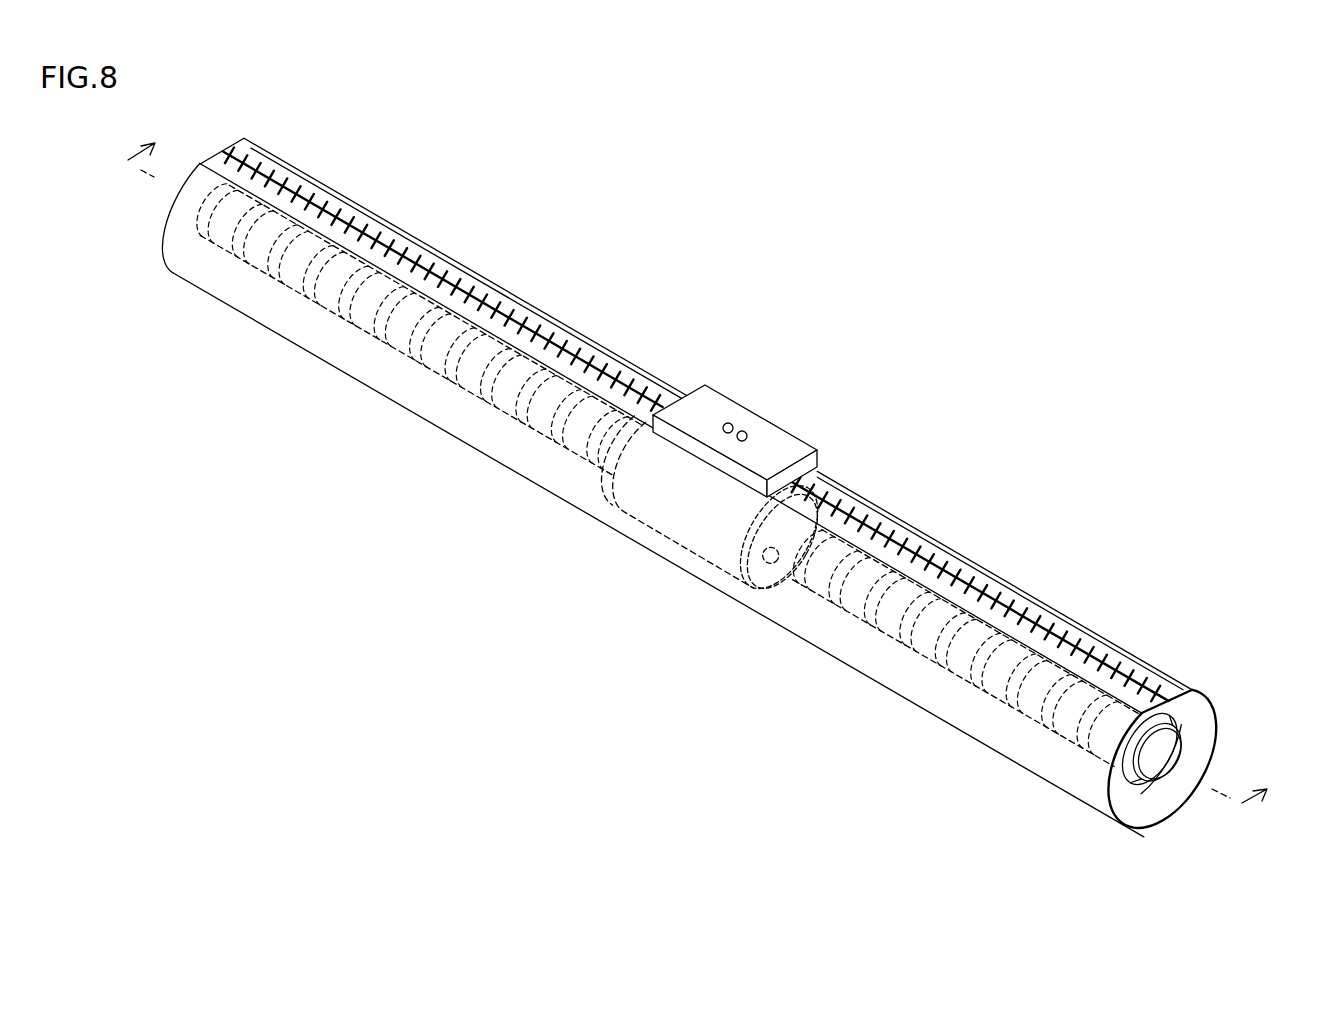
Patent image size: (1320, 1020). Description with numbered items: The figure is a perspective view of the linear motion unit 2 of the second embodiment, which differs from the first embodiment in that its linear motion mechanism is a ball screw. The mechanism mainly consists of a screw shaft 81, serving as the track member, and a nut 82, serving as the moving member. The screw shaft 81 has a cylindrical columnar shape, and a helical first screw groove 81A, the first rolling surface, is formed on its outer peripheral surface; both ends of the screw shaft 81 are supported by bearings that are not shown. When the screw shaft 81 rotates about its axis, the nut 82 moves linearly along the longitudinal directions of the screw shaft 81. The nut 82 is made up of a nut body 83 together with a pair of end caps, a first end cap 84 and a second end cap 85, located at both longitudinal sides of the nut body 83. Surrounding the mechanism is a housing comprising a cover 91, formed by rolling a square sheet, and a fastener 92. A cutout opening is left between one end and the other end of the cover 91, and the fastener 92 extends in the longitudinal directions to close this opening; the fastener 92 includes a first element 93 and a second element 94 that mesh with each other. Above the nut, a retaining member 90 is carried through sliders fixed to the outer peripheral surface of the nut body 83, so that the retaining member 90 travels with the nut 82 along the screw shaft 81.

The linear motion unit 2 is at (1153, 533).
The screw shaft 81 is at (1162, 762).
The first screw groove 81A is at (438, 352).
The nut 82 is at (710, 554).
The nut body 83 is at (697, 540).
The first end cap 84 is at (779, 565).
The second end cap 85 is at (617, 510).
The retaining member 90 is at (718, 405).
The cover 91 is at (1058, 768).
The fastener 92 is at (690, 428).
The first element 93 is at (949, 587).
The second element 94 is at (988, 588).